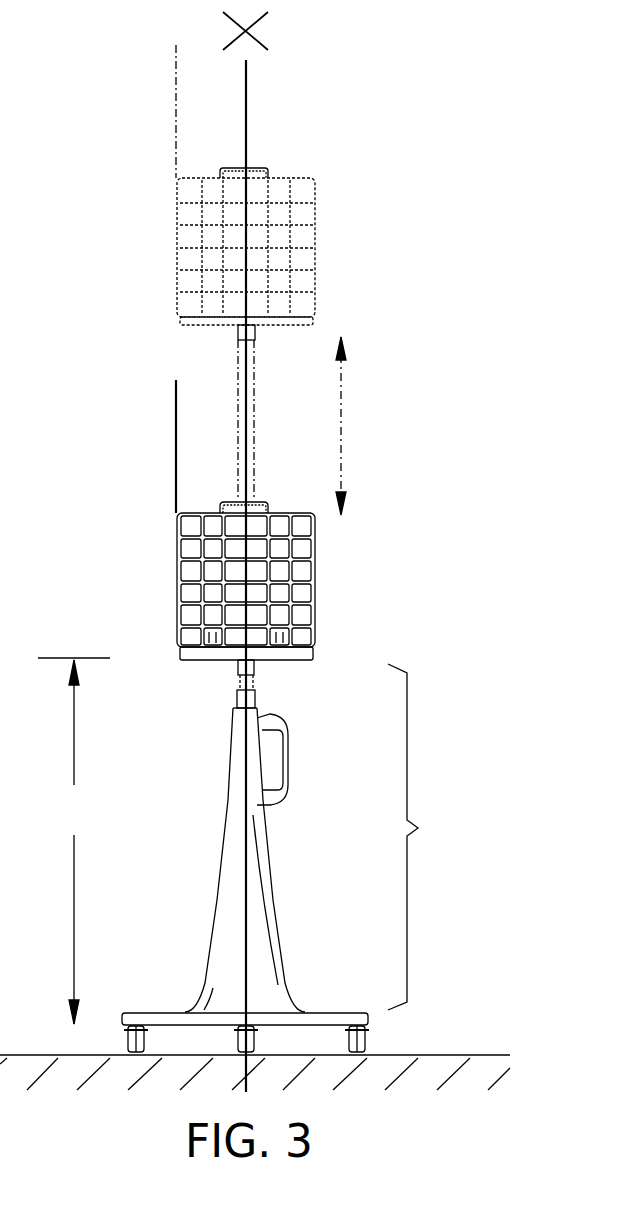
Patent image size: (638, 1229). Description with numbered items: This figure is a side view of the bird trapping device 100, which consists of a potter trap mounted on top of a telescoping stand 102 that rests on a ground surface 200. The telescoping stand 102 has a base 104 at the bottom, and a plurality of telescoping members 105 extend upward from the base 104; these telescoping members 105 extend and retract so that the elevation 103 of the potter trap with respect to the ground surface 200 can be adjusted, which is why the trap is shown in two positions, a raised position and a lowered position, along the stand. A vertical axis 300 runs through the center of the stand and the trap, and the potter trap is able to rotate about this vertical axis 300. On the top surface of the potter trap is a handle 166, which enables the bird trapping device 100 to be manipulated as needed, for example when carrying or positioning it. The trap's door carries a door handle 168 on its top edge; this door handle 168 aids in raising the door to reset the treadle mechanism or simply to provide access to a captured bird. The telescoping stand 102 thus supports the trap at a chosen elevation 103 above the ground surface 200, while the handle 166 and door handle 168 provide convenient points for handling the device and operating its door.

The bird trapping device 100 is at (385, 440).
The telescoping stand 102 is at (436, 837).
The elevation 103 is at (74, 841).
The base 104 is at (335, 1012).
The telescoping members 105 is at (237, 692).
The handle 166 is at (246, 155).
The door handle 168 is at (270, 168).
The ground surface 200 is at (454, 1055).
The vertical axis 300 is at (246, 113).